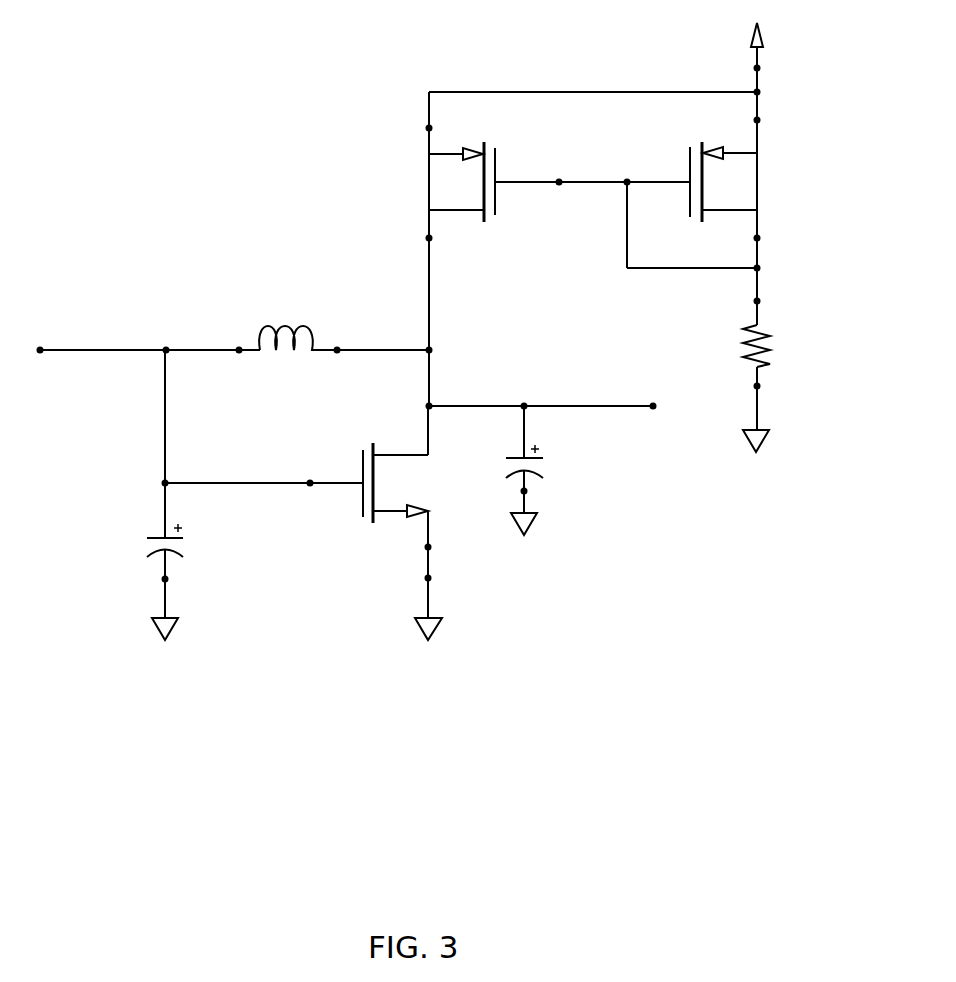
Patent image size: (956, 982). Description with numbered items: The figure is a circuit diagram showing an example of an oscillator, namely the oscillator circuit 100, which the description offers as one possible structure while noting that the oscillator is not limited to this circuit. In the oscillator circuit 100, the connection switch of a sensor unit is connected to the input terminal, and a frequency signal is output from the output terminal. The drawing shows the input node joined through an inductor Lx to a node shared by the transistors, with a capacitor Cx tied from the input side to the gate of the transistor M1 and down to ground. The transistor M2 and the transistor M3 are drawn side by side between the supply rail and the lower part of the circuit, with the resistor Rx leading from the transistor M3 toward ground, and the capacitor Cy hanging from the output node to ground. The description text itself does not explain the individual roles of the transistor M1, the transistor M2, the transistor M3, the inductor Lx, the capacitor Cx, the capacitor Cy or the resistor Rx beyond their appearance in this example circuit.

The oscillator circuit 100 is at (196, 166).
The transistor M1 is at (413, 483).
The transistor M2 is at (447, 182).
The transistor M3 is at (748, 182).
The inductor Lx is at (290, 321).
The capacitor Cx is at (183, 541).
The capacitor Cy is at (541, 464).
The resistor Rx is at (772, 346).